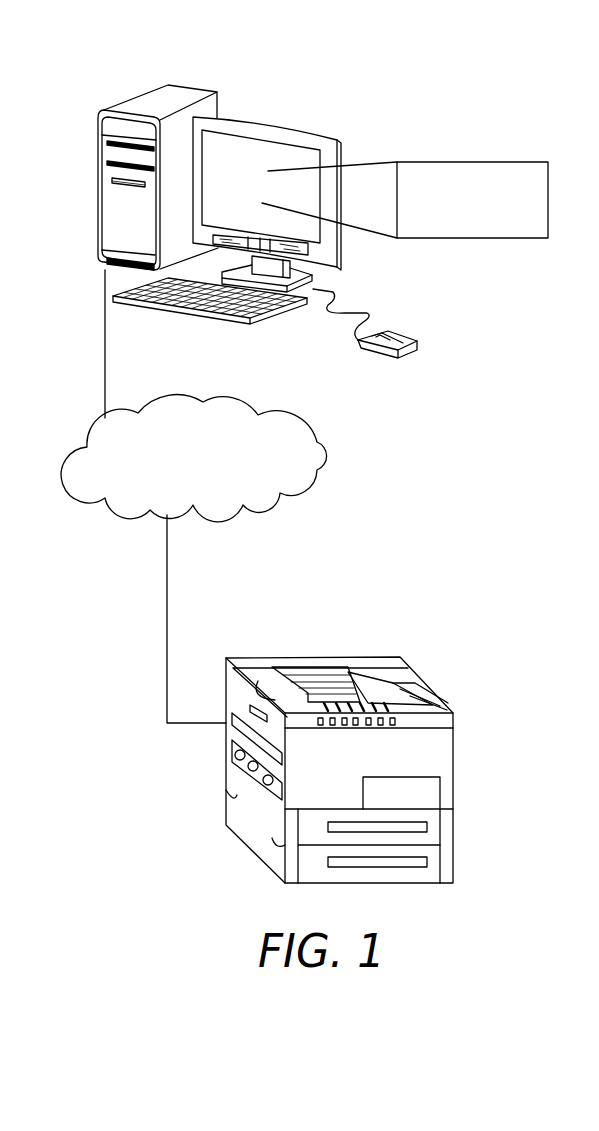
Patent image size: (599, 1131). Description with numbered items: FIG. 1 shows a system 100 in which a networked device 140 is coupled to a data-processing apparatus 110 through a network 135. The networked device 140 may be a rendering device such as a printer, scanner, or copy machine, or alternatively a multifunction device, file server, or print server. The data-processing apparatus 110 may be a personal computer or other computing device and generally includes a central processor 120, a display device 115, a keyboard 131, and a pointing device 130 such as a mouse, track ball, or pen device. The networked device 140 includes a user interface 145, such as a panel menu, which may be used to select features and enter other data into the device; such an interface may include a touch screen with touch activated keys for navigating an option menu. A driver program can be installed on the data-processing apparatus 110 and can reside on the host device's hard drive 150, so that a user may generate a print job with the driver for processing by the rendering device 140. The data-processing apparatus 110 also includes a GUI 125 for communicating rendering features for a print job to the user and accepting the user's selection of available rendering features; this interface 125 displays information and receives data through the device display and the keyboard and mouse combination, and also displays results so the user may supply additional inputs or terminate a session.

The system 100 is at (420, 67).
The data-processing apparatus 110 is at (287, 157).
The display device 115 is at (268, 120).
The central processor 120 is at (102, 260).
The GUI 125 is at (496, 161).
The pointing device 130 is at (397, 332).
The keyboard 131 is at (187, 310).
The network 135 is at (227, 397).
The networked device 140 is at (353, 656).
The user interface 145 is at (397, 687).
The hard drive 150 is at (130, 96).